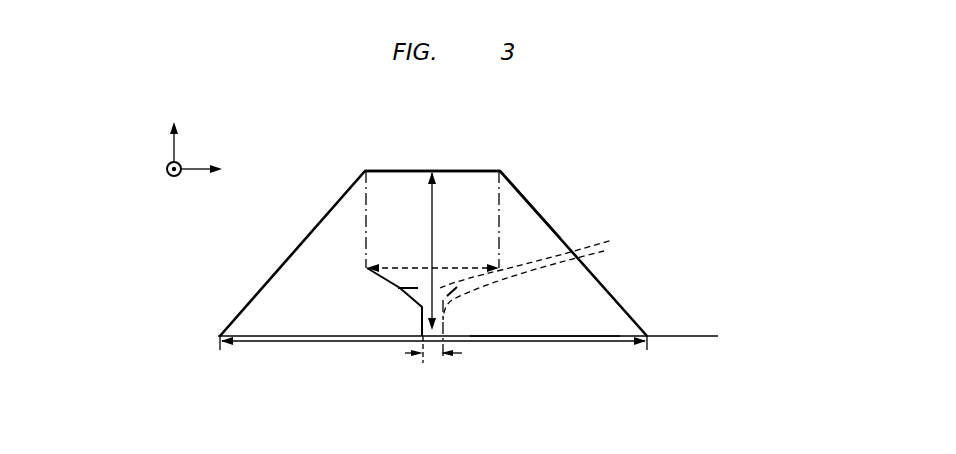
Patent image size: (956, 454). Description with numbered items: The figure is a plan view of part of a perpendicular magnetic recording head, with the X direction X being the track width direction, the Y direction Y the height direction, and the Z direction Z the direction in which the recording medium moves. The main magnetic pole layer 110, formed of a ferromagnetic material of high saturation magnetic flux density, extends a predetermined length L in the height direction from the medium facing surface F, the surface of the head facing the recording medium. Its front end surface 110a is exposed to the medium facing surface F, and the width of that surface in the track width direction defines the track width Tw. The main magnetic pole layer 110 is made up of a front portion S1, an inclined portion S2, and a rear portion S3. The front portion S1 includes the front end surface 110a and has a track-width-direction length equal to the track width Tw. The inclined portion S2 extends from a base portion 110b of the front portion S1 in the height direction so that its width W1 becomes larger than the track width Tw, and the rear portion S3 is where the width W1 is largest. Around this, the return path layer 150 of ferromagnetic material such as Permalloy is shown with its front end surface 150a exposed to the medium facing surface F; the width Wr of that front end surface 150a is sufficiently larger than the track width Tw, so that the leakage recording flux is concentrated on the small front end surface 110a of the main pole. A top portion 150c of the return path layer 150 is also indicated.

The return path layer 150 is at (610, 298).
The front end surface of the return path layer 150a is at (547, 337).
The top surface of body 150c is at (432, 160).
The main magnetic pole layer 110 is at (479, 171).
The front end surface of the main magnetic pole layer 110a is at (423, 350).
The base portion of the front portion 110b is at (557, 291).
The length of the main magnetic pole layer L is at (432, 215).
The width of the inclined portion and rear portion W1 is at (448, 268).
The width of the front end surface of the return path layer Wr is at (433, 353).
The track width Tw is at (432, 356).
The front portion S1 is at (422, 312).
The inclined portion S2 is at (400, 288).
The rear portion S3 is at (487, 194).
The medium facing surface F is at (478, 336).
The X direction X is at (214, 170).
The Y direction Y is at (174, 126).
The Z direction Z is at (169, 185).